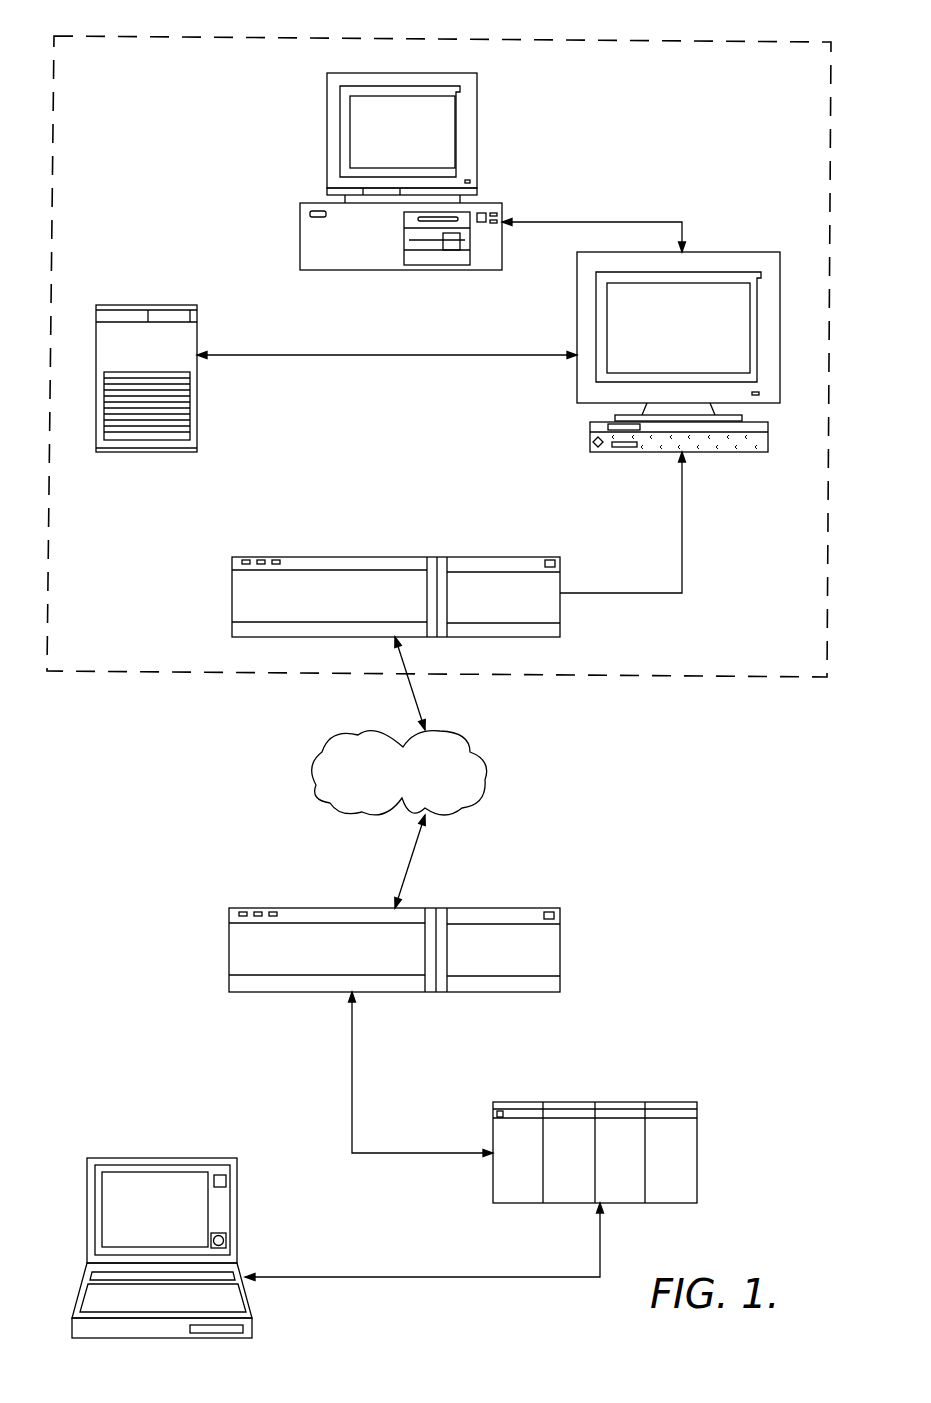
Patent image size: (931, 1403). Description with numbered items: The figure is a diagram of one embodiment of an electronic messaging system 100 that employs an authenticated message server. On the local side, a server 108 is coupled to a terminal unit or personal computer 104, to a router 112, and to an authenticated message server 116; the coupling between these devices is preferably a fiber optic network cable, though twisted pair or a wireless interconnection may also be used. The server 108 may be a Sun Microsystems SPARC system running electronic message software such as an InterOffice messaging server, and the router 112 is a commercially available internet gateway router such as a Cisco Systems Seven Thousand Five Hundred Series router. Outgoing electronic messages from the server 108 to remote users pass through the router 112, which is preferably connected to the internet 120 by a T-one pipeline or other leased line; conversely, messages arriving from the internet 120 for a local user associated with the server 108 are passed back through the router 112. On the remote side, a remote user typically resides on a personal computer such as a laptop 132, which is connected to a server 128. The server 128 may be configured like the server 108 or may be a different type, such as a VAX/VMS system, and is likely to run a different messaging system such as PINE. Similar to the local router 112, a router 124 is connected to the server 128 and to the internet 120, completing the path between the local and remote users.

The electronic messaging system 100 is at (514, 35).
The personal computer 104 is at (477, 97).
The server 108 is at (708, 252).
The router 112 is at (345, 557).
The authenticated message server 116 is at (167, 305).
The internet 120 is at (460, 742).
The router 124 is at (300, 908).
The server 128 is at (585, 1102).
The laptop 132 is at (147, 1158).